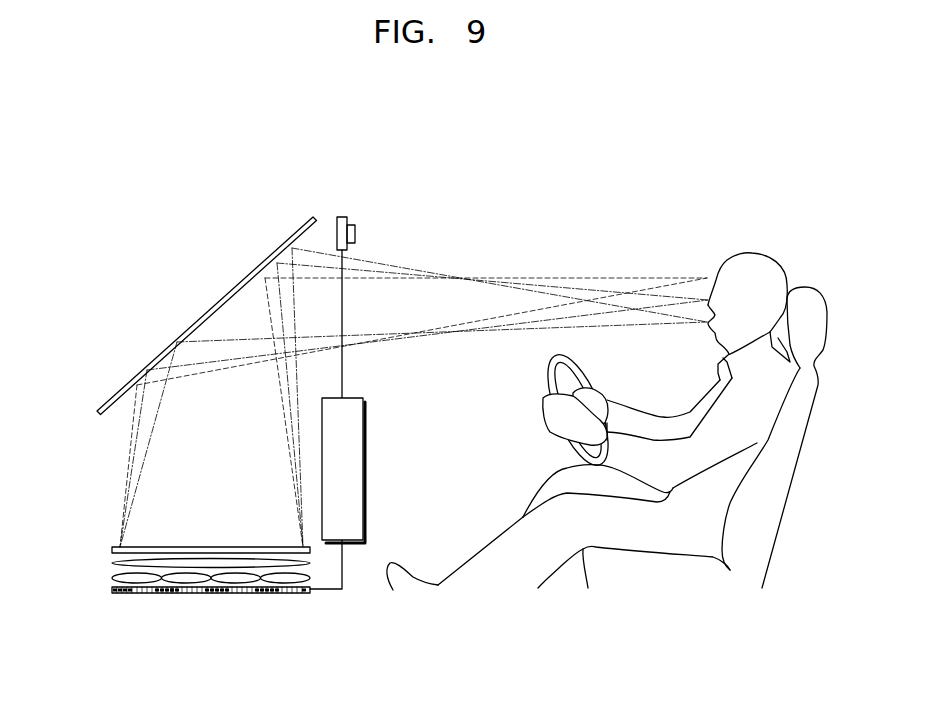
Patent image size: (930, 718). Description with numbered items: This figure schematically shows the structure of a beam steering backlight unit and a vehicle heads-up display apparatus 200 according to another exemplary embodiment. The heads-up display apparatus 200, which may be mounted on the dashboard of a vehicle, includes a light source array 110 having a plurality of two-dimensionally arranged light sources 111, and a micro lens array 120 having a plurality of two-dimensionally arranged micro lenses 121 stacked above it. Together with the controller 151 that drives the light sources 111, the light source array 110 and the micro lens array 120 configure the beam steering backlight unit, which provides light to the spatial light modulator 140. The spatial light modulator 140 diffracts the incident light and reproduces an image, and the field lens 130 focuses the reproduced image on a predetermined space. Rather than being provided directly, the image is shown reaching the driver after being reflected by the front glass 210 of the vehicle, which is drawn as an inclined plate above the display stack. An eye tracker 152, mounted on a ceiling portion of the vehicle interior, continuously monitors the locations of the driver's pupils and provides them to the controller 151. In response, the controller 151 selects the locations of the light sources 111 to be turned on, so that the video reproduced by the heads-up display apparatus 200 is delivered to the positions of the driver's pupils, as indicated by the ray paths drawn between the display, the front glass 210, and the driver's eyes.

The light source array 110 is at (194, 615).
The light sources 111 is at (175, 594).
The micro lens array 120 is at (174, 605).
The micro lenses 121 is at (133, 583).
The field lens 130 is at (112, 563).
The spatial light modulator 140 is at (112, 550).
The controller 151 is at (366, 460).
The eye tracker 152 is at (341, 217).
The heads-up display apparatus 200 is at (166, 582).
The front glass 210 is at (205, 315).